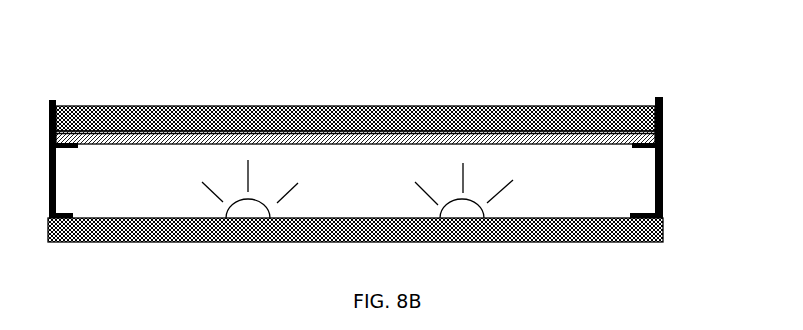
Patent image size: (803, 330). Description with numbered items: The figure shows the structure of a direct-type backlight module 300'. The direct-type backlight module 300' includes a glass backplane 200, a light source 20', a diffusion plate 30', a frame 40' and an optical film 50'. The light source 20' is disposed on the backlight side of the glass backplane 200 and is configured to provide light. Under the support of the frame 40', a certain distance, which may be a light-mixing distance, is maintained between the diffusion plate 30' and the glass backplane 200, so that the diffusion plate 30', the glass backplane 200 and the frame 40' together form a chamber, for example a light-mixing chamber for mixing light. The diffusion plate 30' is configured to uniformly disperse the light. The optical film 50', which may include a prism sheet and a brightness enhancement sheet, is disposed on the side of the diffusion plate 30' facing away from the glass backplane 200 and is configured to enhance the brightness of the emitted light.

The direct-type backlight module 300' is at (383, 143).
The optical film 50' is at (355, 104).
The frame 40' is at (383, 157).
The diffusion plate 30' is at (355, 148).
The light source 20' is at (375, 189).
The glass backplane 200 is at (515, 238).